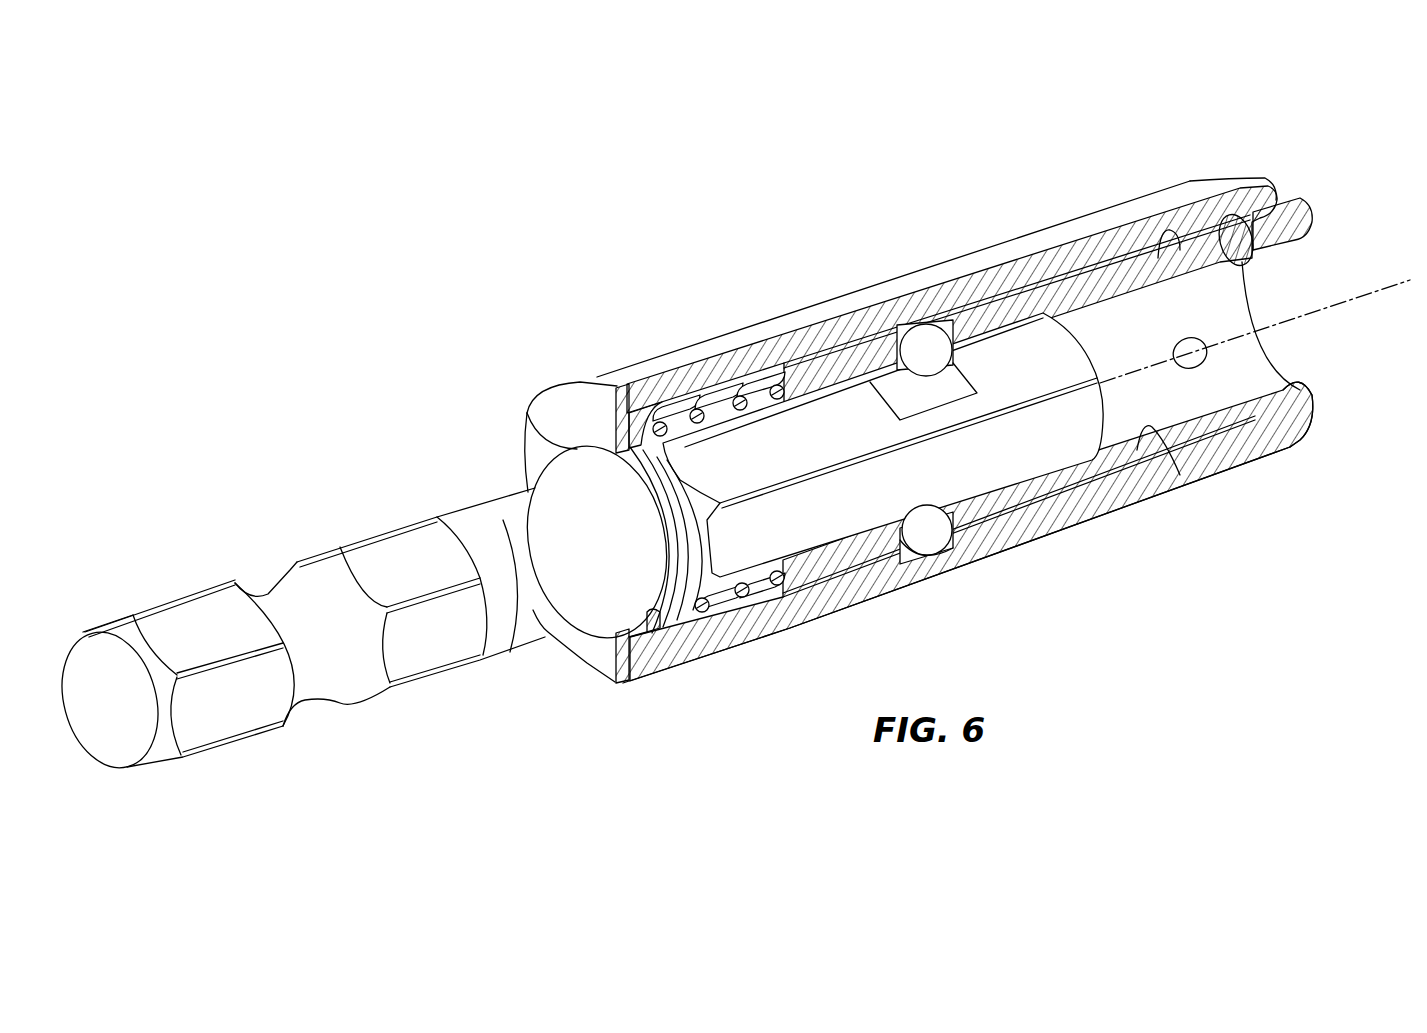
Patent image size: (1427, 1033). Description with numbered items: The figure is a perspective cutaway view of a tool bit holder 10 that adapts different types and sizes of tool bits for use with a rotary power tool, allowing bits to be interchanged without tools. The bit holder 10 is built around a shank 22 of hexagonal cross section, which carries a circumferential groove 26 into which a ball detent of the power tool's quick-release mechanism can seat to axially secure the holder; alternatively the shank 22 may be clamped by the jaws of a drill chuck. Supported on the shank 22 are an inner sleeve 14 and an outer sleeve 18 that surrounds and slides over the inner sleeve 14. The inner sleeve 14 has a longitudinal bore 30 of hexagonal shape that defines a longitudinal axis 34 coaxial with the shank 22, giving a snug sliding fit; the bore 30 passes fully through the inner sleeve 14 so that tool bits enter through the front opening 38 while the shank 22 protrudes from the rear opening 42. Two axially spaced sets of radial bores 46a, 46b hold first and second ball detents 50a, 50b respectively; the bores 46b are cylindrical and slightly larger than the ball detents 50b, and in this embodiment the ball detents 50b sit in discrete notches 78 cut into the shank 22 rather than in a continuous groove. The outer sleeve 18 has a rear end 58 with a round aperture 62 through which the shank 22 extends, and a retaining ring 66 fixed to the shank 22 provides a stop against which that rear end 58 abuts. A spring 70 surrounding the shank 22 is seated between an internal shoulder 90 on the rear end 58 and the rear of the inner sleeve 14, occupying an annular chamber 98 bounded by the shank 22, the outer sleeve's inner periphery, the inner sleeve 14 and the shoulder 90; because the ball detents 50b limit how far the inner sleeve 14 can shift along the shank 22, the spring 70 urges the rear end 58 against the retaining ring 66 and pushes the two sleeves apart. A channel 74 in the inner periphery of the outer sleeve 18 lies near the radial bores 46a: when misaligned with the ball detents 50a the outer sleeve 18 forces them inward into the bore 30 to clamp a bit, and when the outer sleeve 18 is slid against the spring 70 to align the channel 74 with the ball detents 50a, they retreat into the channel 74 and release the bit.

The tool bit holder 10 is at (955, 157).
The inner sleeve 14 is at (1085, 258).
The outer sleeve 18 is at (781, 358).
The shank 22 is at (382, 550).
The circumferential groove 26 is at (355, 688).
The longitudinal bore 30 is at (1163, 436).
The longitudinal axis 34 is at (1340, 300).
The front opening 38 is at (1302, 386).
The rear opening 42 is at (747, 380).
The first plurality of radial bores 46a is at (1236, 212).
The second plurality of radial bores 46b is at (929, 320).
The first plurality of ball detents 50a is at (1237, 210).
The second plurality of ball detents 50b is at (925, 335).
The rear end 58 is at (617, 667).
The round aperture 62 is at (670, 667).
The retaining ring 66 is at (562, 410).
The spring 70 is at (698, 397).
The channel 74 is at (1130, 240).
The notches 78 is at (905, 330).
The internal shoulder 90 is at (672, 620).
The annular chamber 98 is at (746, 600).